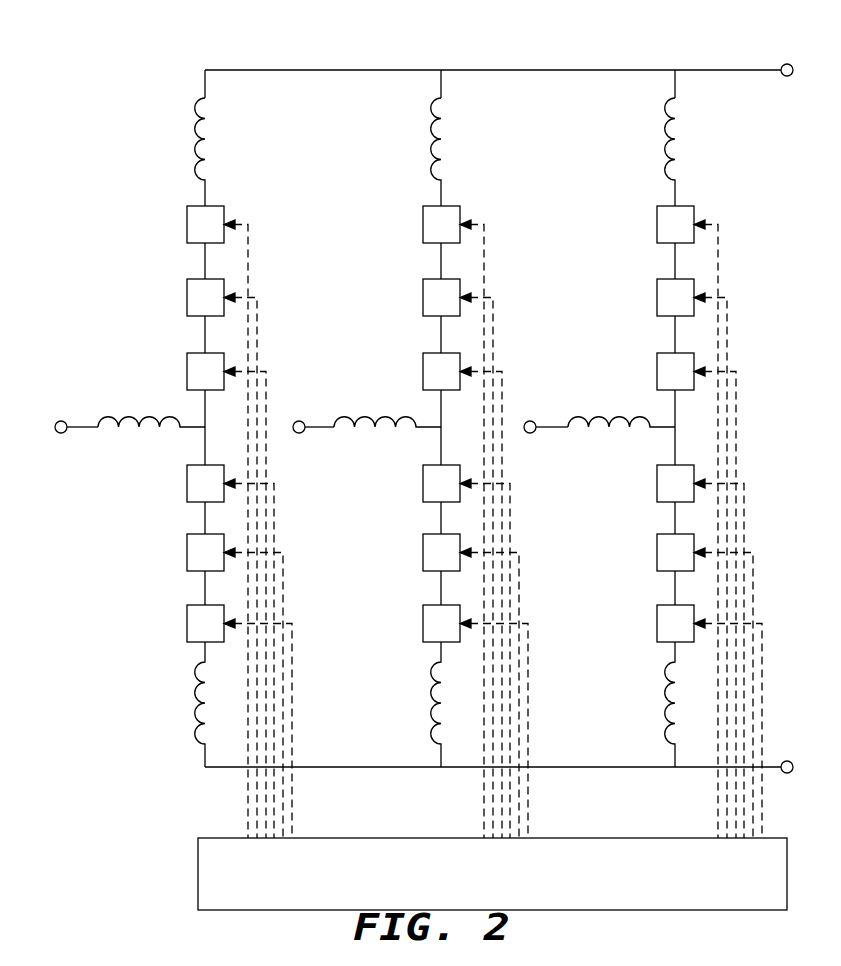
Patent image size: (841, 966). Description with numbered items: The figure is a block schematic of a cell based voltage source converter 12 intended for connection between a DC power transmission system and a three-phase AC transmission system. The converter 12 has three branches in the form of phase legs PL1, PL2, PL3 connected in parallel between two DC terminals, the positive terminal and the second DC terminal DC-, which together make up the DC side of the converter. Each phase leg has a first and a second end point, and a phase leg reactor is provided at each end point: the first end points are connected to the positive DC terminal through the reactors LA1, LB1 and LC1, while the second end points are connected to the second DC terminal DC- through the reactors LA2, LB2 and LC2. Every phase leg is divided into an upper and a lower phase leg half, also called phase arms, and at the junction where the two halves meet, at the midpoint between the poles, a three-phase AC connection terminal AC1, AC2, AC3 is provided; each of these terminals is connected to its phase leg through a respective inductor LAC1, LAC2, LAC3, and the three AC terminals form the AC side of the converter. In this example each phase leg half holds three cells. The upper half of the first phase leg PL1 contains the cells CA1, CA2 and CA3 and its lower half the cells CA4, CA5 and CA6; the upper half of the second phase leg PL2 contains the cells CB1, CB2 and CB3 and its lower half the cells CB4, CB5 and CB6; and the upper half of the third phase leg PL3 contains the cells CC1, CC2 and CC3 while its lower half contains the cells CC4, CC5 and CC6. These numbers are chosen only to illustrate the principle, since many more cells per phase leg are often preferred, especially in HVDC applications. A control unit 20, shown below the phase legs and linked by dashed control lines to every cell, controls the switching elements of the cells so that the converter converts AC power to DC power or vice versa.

The voltage source converter 12 is at (156, 93).
The control unit 20 is at (492, 874).
The first phase leg PL1 is at (202, 67).
The second phase leg PL2 is at (438, 67).
The third phase leg PL3 is at (672, 67).
The phase leg reactor LA1 is at (166, 152).
The phase leg reactor LA2 is at (169, 704).
The phase leg reactor LB1 is at (402, 152).
The phase leg reactor LB2 is at (405, 704).
The phase leg reactor LC1 is at (636, 152).
The phase leg reactor LC2 is at (639, 704).
The cell CA1 is at (183, 522).
The cell CA2 is at (187, 558).
The cell CA3 is at (192, 595).
The cell CA4 is at (196, 651).
The cell CA5 is at (200, 686).
The cell CA6 is at (205, 721).
The cell CB1 is at (419, 522).
The cell CB2 is at (423, 558).
The cell CB3 is at (428, 595).
The cell CB4 is at (432, 651).
The cell CB5 is at (436, 686).
The cell CB6 is at (441, 721).
The cell CC1 is at (653, 522).
The cell CC2 is at (657, 558).
The cell CC3 is at (662, 595).
The cell CC4 is at (666, 651).
The cell CC5 is at (670, 686).
The cell CC6 is at (675, 721).
The AC connection terminal AC1 is at (72, 409).
The AC connection terminal AC2 is at (310, 409).
The AC connection terminal AC3 is at (541, 409).
The inductor LAC1 is at (151, 439).
The inductor LAC2 is at (387, 439).
The inductor LAC3 is at (621, 439).
The second DC terminal DC- is at (789, 746).